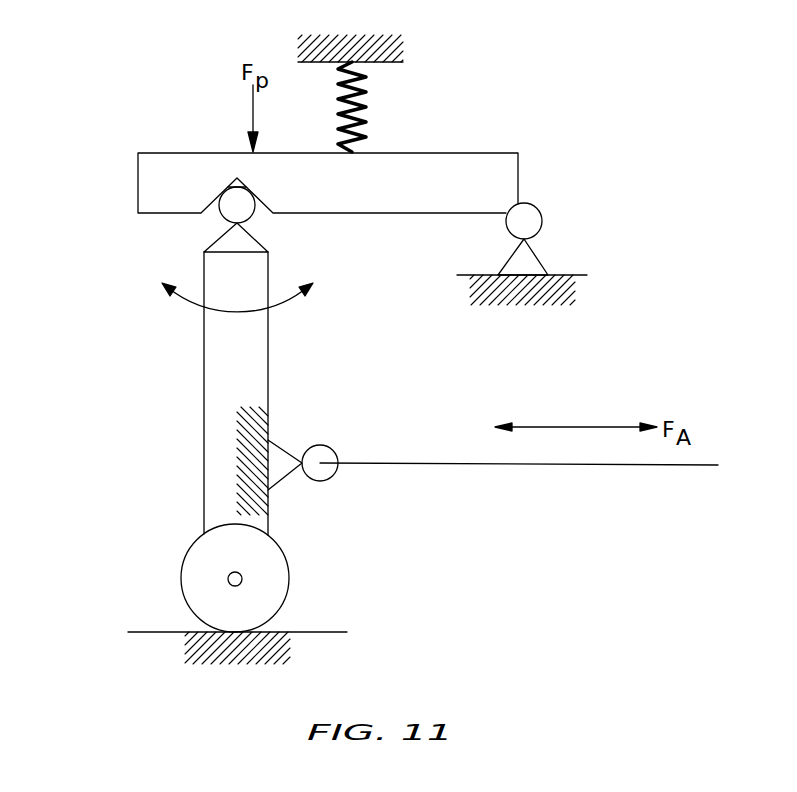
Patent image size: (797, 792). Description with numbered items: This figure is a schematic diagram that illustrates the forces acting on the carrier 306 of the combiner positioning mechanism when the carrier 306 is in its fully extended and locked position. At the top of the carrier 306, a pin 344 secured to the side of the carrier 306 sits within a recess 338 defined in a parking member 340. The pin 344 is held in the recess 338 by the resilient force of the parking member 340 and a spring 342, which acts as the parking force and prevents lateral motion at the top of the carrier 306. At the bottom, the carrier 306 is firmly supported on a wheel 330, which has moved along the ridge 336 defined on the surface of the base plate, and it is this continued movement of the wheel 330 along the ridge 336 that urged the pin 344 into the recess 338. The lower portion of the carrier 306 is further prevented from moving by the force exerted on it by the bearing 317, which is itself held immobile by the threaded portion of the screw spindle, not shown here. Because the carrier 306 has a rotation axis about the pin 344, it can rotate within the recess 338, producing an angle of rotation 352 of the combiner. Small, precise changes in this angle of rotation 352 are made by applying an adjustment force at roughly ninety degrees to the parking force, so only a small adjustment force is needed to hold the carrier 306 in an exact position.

The carrier 306 is at (222, 388).
The bearing 317 is at (343, 440).
The wheel 330 is at (290, 562).
The ridge 336 is at (295, 650).
The recess 338 is at (257, 201).
The parking member 340 is at (173, 175).
The spring 342 is at (365, 107).
The pin 344 is at (237, 205).
The angle of rotation 352 is at (260, 291).